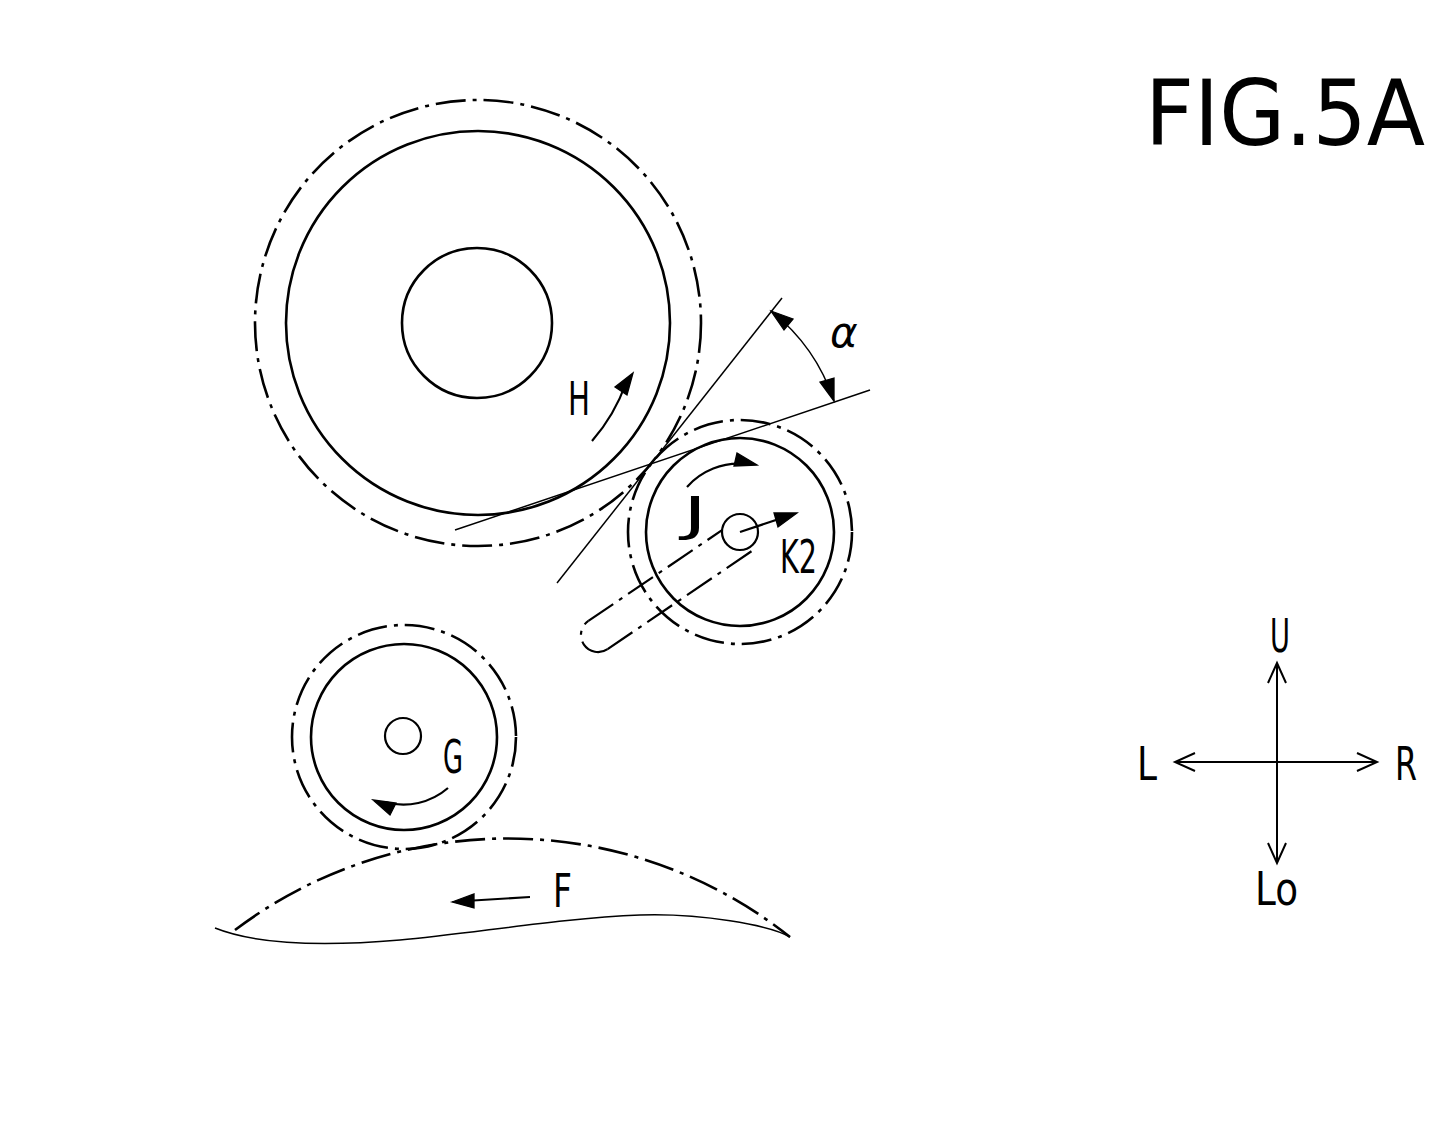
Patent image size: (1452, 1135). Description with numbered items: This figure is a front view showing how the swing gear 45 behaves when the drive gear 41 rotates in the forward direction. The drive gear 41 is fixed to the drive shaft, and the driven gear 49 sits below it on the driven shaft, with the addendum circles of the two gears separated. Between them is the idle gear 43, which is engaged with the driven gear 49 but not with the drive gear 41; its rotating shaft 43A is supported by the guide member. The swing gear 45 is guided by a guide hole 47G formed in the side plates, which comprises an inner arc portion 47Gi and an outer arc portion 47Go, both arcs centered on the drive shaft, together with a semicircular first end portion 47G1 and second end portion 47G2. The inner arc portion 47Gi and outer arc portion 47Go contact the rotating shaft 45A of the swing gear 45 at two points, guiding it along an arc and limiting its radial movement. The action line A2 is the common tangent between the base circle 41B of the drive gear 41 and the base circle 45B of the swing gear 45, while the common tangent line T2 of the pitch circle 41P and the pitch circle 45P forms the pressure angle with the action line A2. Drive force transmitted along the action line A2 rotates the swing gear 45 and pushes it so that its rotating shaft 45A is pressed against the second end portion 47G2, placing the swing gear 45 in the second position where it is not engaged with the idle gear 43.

The drive gear 41 is at (404, 295).
The base circle of the drive gear 41B is at (308, 232).
The pitch circle of the drive gear 41P is at (257, 278).
The idle gear 43 is at (320, 730).
The rotating shaft of the idle gear 43A is at (385, 738).
The swing gear 45 is at (827, 569).
The rotating shaft of the swing gear 45A is at (748, 551).
The base circle of the swing gear 45B is at (817, 588).
The pitch circle of the swing gear 45P is at (817, 617).
The guide hole 47G is at (687, 620).
The first end portion 47G1 is at (583, 642).
The second end portion 47G2 is at (747, 512).
The inner arc portion 47Gi is at (617, 604).
The outer arc portion 47Go is at (638, 640).
The driven gear 49 is at (702, 889).
The common tangent line T2 is at (692, 409).
The action line A2 is at (696, 444).